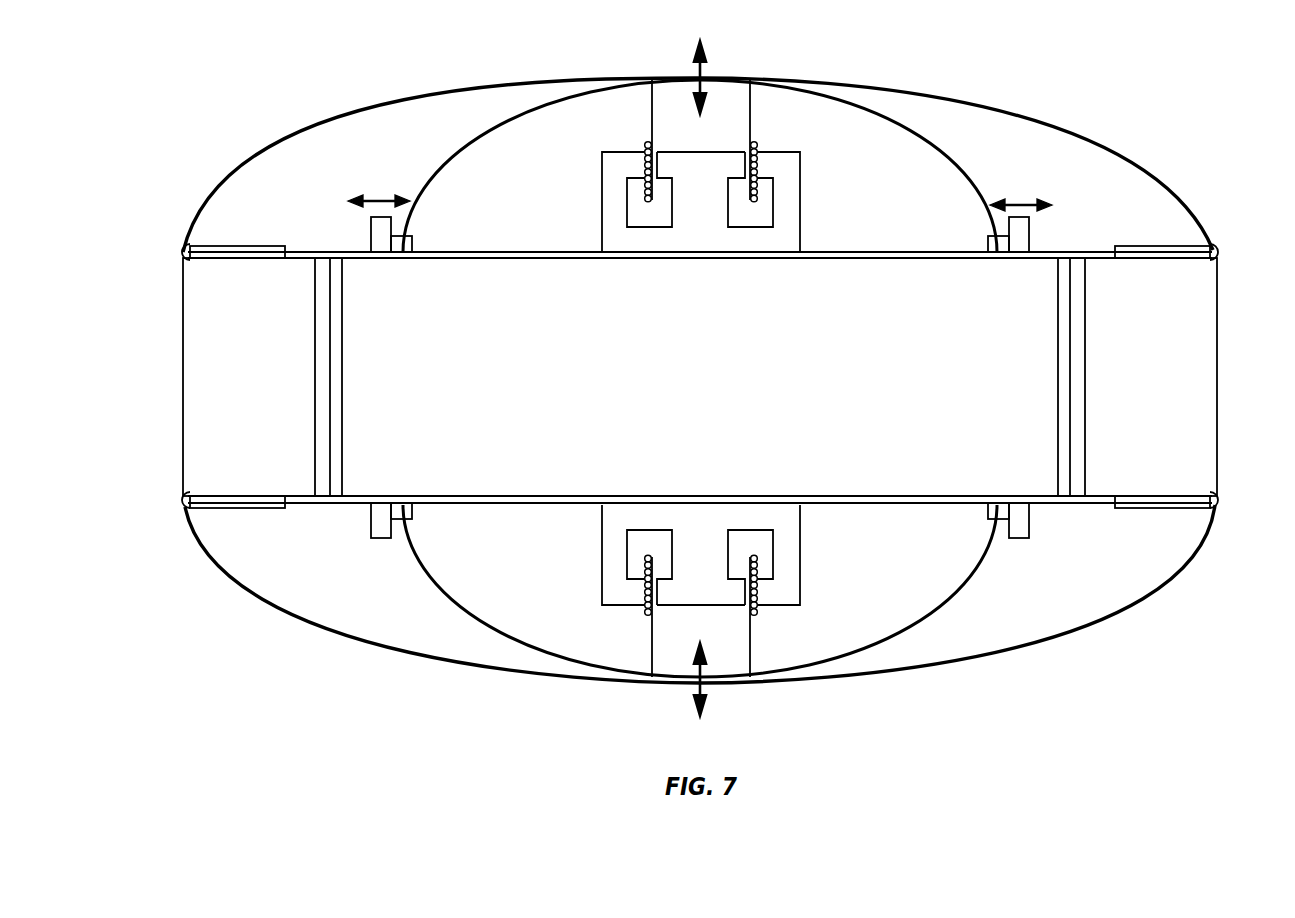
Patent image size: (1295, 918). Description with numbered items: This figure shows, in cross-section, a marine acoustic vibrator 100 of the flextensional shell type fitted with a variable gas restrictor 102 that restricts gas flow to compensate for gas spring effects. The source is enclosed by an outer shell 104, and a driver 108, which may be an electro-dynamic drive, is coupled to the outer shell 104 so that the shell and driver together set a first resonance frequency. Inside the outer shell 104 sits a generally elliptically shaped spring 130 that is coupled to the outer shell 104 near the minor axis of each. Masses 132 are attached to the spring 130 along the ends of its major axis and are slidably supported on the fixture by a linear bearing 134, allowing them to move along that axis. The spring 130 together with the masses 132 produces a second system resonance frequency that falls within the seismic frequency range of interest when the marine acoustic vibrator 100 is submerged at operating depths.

The marine acoustic vibrator 100 is at (728, 378).
The variable gas restrictor 102 is at (314, 357).
The outer shell 104 is at (1069, 128).
The driver 108 is at (819, 196).
The spring 130 is at (953, 162).
The masses 132 is at (370, 230).
The linear bearing 134 is at (400, 259).